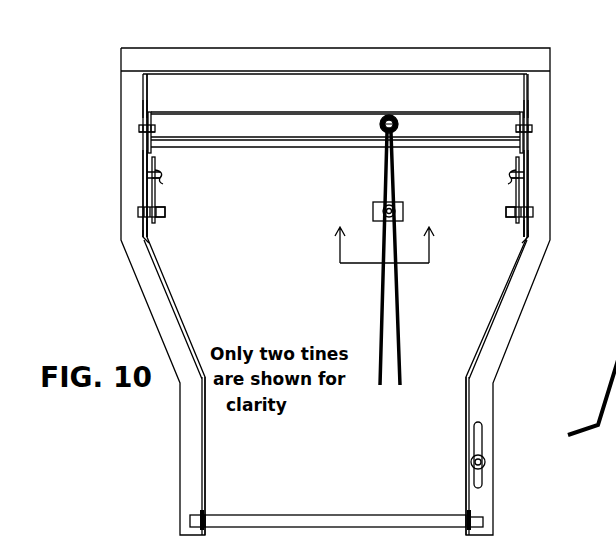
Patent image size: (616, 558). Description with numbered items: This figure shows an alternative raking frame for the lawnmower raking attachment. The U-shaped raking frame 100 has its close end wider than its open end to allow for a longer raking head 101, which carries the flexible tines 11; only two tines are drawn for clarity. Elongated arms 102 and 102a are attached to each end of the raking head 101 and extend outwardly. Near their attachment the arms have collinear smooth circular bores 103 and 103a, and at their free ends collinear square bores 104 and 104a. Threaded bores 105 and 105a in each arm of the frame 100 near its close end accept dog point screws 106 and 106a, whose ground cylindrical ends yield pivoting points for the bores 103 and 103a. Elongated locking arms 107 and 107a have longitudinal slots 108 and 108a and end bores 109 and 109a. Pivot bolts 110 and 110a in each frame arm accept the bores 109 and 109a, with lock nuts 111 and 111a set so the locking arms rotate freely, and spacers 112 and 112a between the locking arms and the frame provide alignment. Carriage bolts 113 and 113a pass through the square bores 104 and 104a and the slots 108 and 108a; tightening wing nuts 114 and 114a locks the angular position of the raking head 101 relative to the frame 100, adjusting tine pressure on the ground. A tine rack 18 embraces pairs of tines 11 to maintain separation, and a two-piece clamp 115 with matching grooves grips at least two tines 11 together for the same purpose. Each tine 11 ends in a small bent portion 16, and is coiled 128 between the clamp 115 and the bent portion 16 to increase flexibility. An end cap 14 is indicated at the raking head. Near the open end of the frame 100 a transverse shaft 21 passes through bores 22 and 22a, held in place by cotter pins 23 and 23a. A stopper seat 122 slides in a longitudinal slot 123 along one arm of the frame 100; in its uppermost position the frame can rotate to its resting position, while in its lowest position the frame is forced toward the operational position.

The U-shaped raking frame 100 is at (352, 47).
The raking head 101 is at (309, 110).
The tine rack 18 is at (281, 153).
The elongated arm 102a is at (149, 123).
The elongated arm 102 is at (518, 120).
The smooth circular bore 103a is at (156, 129).
The smooth circular bore 103 is at (515, 129).
The threaded bore 105a is at (145, 122).
The threaded bore 105 is at (527, 123).
The dog point screw 106a is at (143, 127).
The dog point screw 106 is at (530, 132).
The carriage bolt 113a is at (145, 173).
The carriage bolt 113 is at (528, 175).
The square bore 104a is at (145, 185).
The square bore 104 is at (528, 185).
The pivot bolt 110a is at (143, 213).
The pivot bolt 110 is at (530, 213).
The spacer 112a is at (145, 240).
The spacer 112 is at (537, 277).
The wing nut 114a is at (165, 175).
The wing nut 114 is at (511, 175).
The longitudinal slot 108a is at (162, 180).
The longitudinal slot 108 is at (510, 182).
The elongated locking arm 107a is at (158, 202).
The elongated locking arm 107 is at (513, 204).
The lock nut 111a is at (158, 220).
The lock nut 111 is at (513, 219).
The bore 109a is at (158, 225).
The bore 109 is at (513, 225).
The flexible tines 11 is at (414, 260).
The bent free-end portion 16 is at (403, 370).
The two-piece clamp 115 is at (373, 204).
The first end cap 14 is at (387, 231).
The transverse shaft 21 is at (325, 509).
The second bore 22a is at (208, 512).
The first bore 22 is at (466, 519).
The second cotter pin 23a is at (200, 513).
The first cotter pin 23 is at (470, 533).
The longitudinal slot 123 is at (474, 450).
The stopper seat 122 is at (485, 470).
The coil 128 is at (568, 432).